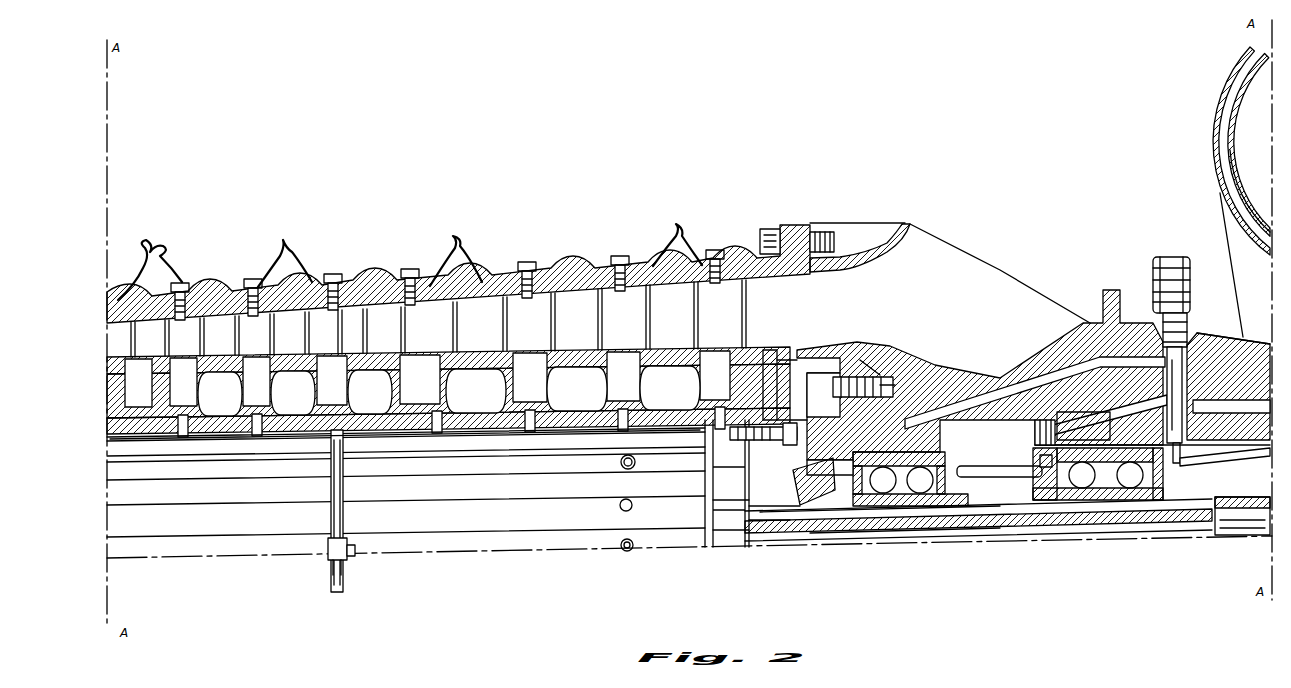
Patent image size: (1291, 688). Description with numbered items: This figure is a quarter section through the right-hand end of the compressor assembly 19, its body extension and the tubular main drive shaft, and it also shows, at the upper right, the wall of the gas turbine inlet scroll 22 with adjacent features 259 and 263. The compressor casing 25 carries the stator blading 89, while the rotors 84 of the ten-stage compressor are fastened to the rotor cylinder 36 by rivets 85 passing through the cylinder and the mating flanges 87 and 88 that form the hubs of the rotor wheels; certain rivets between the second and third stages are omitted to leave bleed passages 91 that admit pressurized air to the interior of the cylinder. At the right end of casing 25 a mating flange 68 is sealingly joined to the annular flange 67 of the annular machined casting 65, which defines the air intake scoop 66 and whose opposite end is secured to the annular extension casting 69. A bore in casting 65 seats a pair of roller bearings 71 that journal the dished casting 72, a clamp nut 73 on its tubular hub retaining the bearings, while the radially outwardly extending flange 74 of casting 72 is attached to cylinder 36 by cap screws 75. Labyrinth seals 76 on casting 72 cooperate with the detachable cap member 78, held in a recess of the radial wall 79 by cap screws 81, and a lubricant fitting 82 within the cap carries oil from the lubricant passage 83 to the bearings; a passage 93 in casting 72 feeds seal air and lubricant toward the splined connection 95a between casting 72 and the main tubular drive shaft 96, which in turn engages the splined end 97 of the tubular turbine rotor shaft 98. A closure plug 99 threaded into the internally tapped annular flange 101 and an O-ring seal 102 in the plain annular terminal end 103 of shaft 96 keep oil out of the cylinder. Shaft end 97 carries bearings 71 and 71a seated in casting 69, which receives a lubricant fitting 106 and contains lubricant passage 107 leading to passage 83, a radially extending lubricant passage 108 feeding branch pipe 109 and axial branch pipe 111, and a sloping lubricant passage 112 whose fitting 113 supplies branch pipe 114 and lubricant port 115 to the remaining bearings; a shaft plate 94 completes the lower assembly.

The compressor assembly 19 is at (707, 228).
The gas turbine inlet scroll 22 is at (1238, 108).
The compressor casing 25 is at (370, 286).
The rotor cylinder 36 is at (405, 456).
The annular machined casting 65 is at (910, 224).
The air intake scoop 66 is at (995, 272).
The annular flange 67 is at (806, 229).
The mating flange 68 is at (776, 228).
The annular extension casting 69 is at (1210, 323).
The roller bearings 71 is at (900, 452).
The roller bearing 71a is at (1080, 422).
The dished casting 72 is at (828, 527).
The clamp nut 73 is at (960, 497).
The radially outwardly extending flange 74 is at (786, 420).
The cap screws 75 is at (792, 430).
The labyrinth seals 76 is at (815, 450).
The detachable cap member 78 is at (835, 393).
The radial wall 79 is at (870, 366).
The cap screws 81 is at (885, 378).
The lubricant fitting 82 is at (814, 481).
The lubricant passage 83 is at (980, 396).
The rotors 84 is at (565, 323).
The rivets 85 is at (435, 437).
The mating flange 87 is at (440, 420).
The mating flange 88 is at (425, 437).
The stator blading 89 is at (410, 290).
The bleed passages 91 is at (630, 416).
The air passage / inclined passageway 93 is at (760, 473).
The shaft plate 94 is at (810, 513).
The splined connection 95a is at (873, 522).
The main tubular drive shaft 96 is at (1118, 522).
The splined end 97 is at (1140, 512).
The tubular turbine rotor shaft 98 is at (1225, 512).
The closure plug 99 is at (750, 506).
The internally tapped annular flange 101 is at (790, 513).
The O-ring seal 102 is at (765, 522).
The plain annular terminal end 103 is at (745, 531).
The lubricant fitting 106 is at (1190, 276).
The lubricant passage 107 is at (1135, 362).
The radially extending lubricant passage 108 is at (1185, 378).
The lubricant branch pipe 109 is at (1183, 446).
The axially extending lubricant branch pipe 111 is at (1238, 460).
The sloping lubricant passage 112 is at (1135, 416).
The lubricant fitting 113 is at (1033, 433).
The branch pipe 114 is at (990, 458).
The lubricant port 115 is at (1040, 458).
The combustor liner 259 is at (1213, 170).
The liner stud 263 is at (1218, 133).